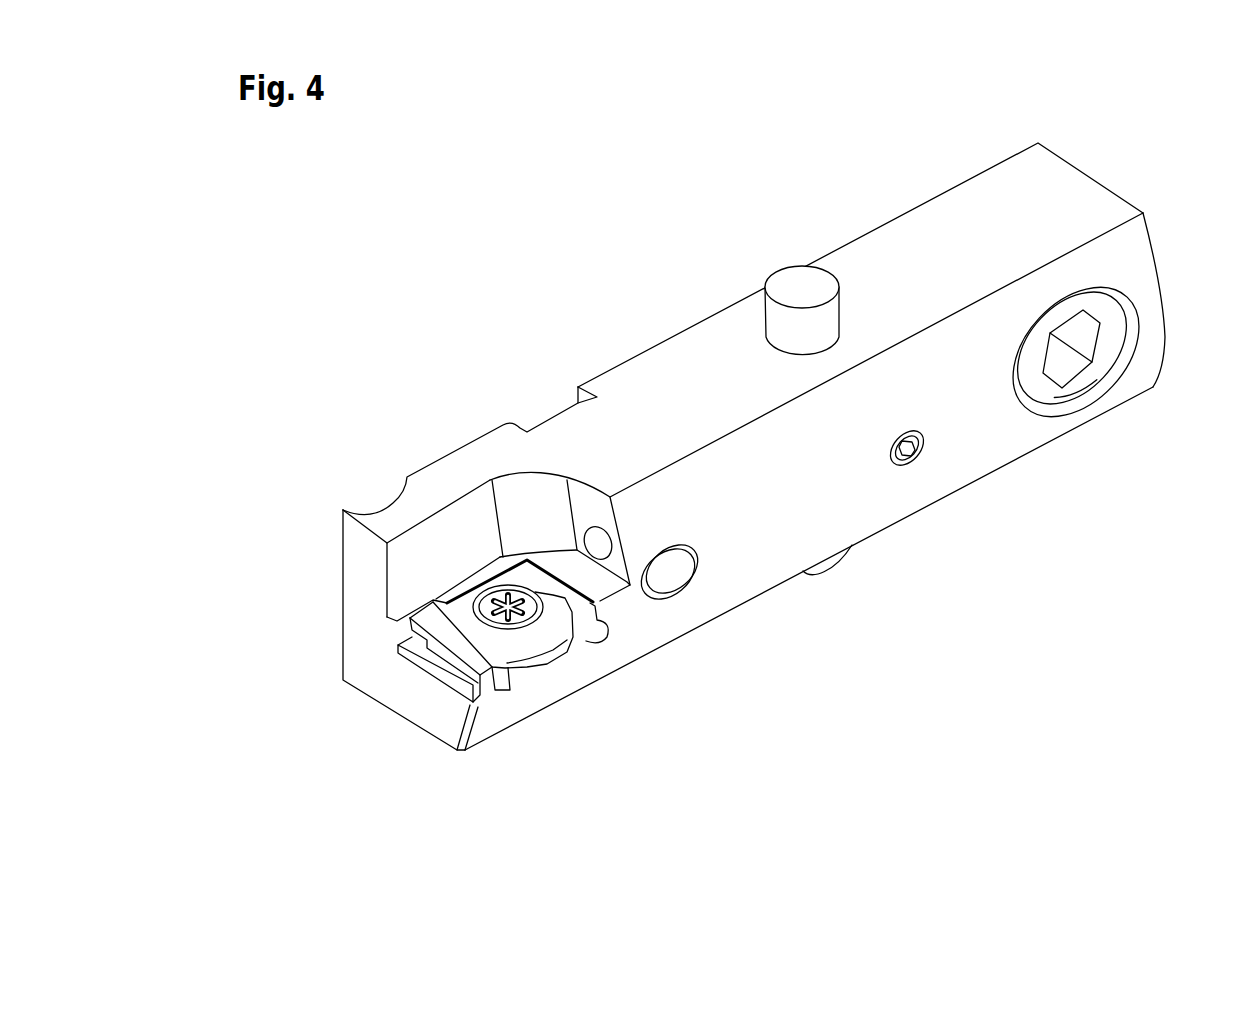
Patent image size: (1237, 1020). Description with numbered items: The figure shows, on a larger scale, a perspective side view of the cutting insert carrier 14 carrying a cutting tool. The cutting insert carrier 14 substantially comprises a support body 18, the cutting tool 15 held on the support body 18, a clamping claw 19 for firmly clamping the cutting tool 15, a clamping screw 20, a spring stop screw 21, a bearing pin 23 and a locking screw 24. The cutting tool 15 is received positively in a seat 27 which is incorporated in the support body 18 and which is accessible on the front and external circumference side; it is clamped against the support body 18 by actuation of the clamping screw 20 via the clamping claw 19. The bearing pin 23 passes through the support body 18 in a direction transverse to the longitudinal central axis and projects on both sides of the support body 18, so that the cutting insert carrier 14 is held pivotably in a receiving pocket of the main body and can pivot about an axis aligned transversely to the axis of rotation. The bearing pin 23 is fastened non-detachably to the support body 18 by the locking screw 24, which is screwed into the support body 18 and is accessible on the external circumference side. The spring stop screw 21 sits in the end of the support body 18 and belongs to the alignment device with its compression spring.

The cutting insert carrier 14 is at (754, 446).
The cutting tool 15 is at (490, 690).
The support body 18 is at (1010, 432).
The clamping claw 19 is at (537, 643).
The clamping screw 20 is at (543, 603).
The spring stop screw 21 is at (1085, 377).
The bearing pin 23 is at (783, 287).
The locking screw 24 is at (910, 460).
The seat 27 is at (393, 647).